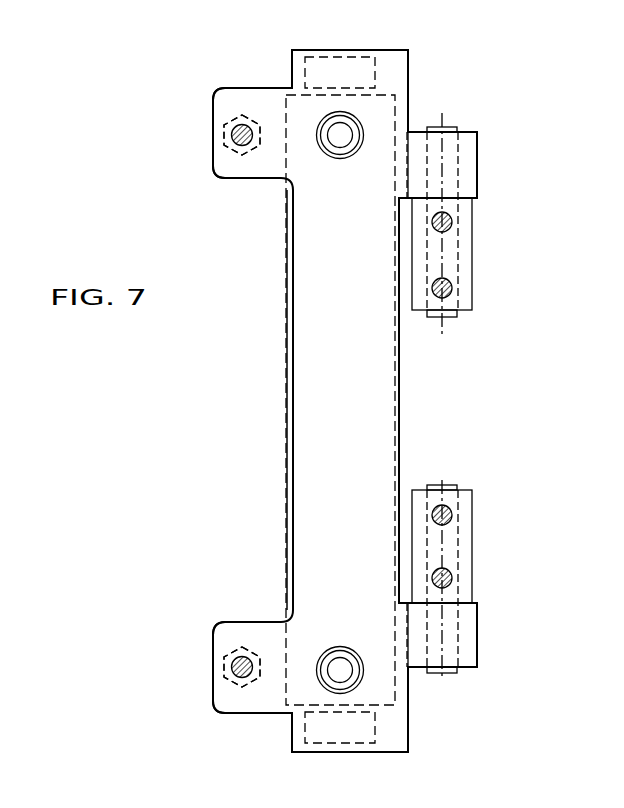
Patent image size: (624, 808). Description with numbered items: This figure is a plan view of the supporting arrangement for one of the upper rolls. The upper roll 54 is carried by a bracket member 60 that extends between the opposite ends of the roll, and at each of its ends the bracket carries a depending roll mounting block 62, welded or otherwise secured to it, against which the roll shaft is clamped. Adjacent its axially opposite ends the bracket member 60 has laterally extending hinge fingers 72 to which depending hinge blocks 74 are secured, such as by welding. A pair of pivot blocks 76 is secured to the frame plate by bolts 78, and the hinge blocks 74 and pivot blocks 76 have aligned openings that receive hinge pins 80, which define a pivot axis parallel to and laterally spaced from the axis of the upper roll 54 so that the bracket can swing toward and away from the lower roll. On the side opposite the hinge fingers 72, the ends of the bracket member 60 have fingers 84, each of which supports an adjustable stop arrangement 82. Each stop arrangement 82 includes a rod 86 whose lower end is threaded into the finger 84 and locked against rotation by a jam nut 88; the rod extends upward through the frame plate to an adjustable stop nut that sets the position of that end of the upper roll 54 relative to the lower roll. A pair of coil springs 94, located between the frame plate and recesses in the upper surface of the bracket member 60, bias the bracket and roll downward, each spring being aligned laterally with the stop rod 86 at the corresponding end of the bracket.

The upper roll 54 is at (287, 452).
The bracket member 60 is at (372, 395).
The roll mounting block 62 is at (372, 72).
The hinge finger 72 is at (470, 150).
The hinge block 74 is at (470, 178).
The pivot block 76 is at (465, 270).
The bolt 78 is at (452, 290).
The hinge pin 80 is at (450, 128).
The adjustable stop arrangement 82 is at (233, 158).
The finger 84 is at (258, 170).
The rod 86 is at (232, 128).
The jam nut 88 is at (247, 112).
The coil spring 94 is at (346, 150).